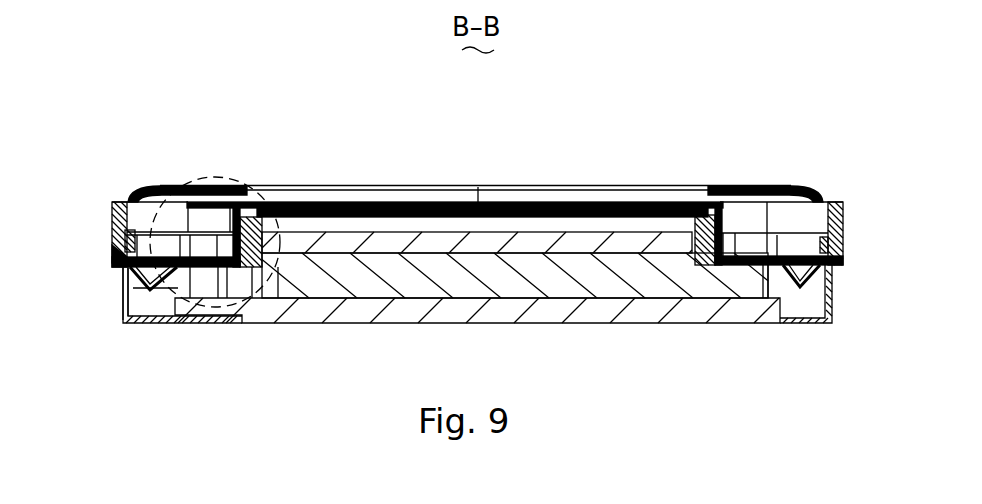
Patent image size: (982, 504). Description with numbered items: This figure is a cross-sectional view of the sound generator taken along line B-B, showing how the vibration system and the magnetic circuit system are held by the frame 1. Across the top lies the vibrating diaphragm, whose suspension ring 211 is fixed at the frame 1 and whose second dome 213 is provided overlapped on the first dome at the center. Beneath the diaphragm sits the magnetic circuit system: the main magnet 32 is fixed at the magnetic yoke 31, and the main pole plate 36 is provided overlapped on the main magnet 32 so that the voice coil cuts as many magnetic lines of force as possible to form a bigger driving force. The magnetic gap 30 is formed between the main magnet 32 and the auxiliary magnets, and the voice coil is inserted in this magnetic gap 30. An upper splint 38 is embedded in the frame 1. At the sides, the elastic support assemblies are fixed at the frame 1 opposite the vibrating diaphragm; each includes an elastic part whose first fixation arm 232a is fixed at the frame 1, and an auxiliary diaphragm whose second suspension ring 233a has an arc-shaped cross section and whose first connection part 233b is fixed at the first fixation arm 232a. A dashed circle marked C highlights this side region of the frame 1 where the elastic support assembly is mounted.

The frame 1 is at (842, 223).
The suspension ring 211 is at (498, 190).
The second dome 213 is at (337, 205).
The main pole plate 36 is at (620, 240).
The main magnet 32 is at (512, 288).
The magnetic gap 30 is at (242, 290).
The magnetic yoke 31 is at (163, 322).
The upper splint 38 is at (838, 242).
The first fixation arm 232a is at (117, 255).
The first connection part 233b is at (120, 263).
The second suspension ring 233a is at (128, 298).
The detail region C is at (212, 178).